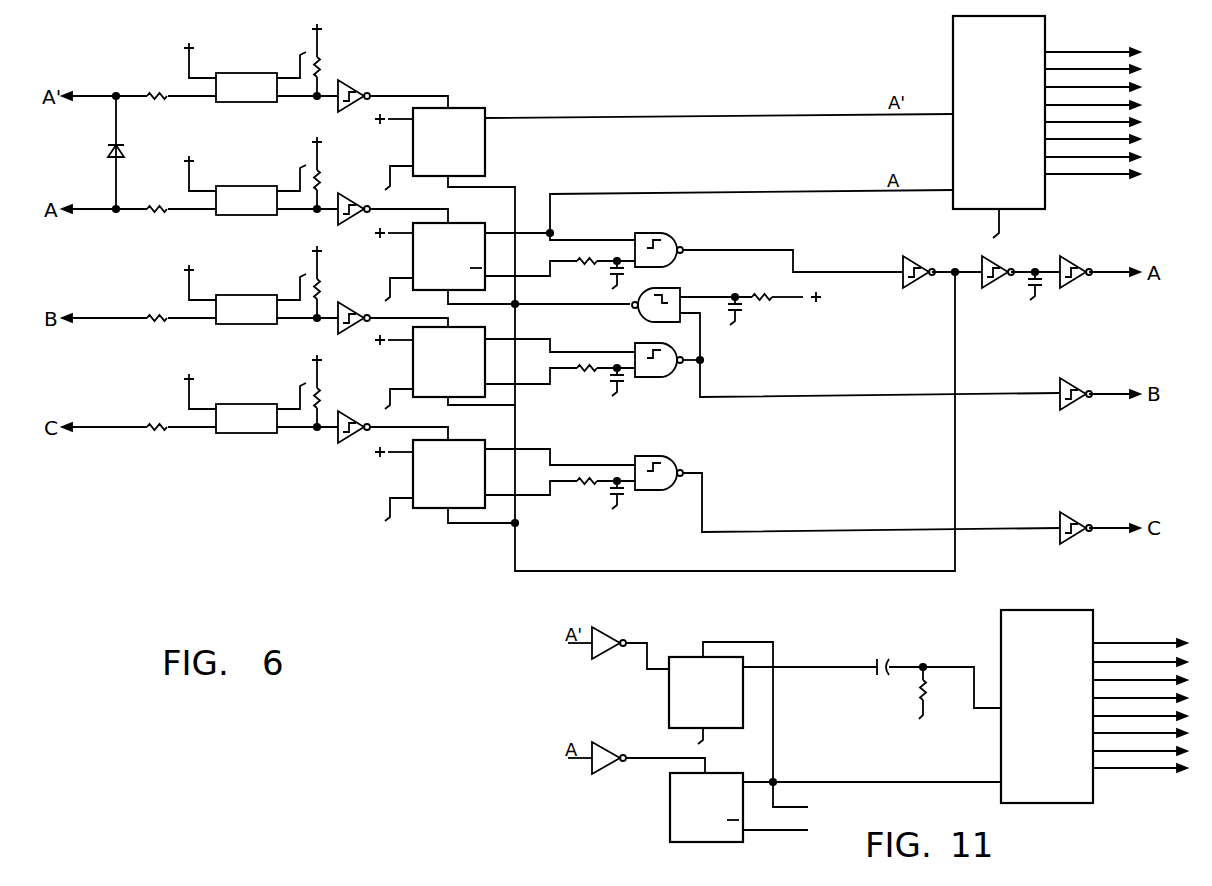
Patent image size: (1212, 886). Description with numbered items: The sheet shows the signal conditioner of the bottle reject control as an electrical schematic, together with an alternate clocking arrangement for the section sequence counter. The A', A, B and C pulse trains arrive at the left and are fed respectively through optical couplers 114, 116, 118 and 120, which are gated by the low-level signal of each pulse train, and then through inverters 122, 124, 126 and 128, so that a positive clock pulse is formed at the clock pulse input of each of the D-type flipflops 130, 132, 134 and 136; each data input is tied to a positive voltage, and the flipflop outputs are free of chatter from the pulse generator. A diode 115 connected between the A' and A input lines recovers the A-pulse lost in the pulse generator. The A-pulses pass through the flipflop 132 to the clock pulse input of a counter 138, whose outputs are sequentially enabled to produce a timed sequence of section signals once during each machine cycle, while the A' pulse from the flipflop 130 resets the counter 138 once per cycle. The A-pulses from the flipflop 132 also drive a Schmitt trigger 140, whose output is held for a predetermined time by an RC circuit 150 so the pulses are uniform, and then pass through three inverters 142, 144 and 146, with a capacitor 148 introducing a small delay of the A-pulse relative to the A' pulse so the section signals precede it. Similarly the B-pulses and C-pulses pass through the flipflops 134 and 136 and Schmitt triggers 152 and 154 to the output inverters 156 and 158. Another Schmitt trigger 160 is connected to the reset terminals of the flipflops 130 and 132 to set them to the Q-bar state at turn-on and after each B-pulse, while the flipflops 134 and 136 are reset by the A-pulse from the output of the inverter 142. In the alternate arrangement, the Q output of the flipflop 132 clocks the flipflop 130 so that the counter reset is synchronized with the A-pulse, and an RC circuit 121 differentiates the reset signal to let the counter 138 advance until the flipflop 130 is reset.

In FIG. 6, the optical coupler 114 is at (257, 101).
In FIG. 6, the diode 115 is at (124, 151).
In FIG. 6, the optical coupler 116 is at (250, 214).
In FIG. 6, the optical coupler 118 is at (246, 323).
In FIG. 6, the optical coupler 120 is at (252, 432).
In FIG. 11, the RC circuit 121 is at (880, 657).
In FIG. 6, the inverter 122 is at (350, 87).
In FIG. 11, the inverter 122 is at (605, 642).
In FIG. 6, the inverter 124 is at (350, 198).
In FIG. 11, the inverter 124 is at (610, 756).
In FIG. 6, the inverter 126 is at (350, 308).
In FIG. 6, the inverter 128 is at (358, 409).
In FIG. 6, the D-type flipflop 130 is at (472, 107).
In FIG. 11, the D-type flipflop 130 is at (683, 657).
In FIG. 6, the D-type flipflop 132 is at (465, 223).
In FIG. 11, the D-type flipflop 132 is at (670, 800).
In FIG. 6, the D-type flipflop 134 is at (463, 327).
In FIG. 6, the D-type flipflop 136 is at (455, 440).
In FIG. 6, the counter 138 is at (953, 65).
In FIG. 11, the counter 138 is at (1001, 664).
In FIG. 6, the Schmitt trigger 140 is at (683, 224).
In FIG. 6, the inverter 142 is at (919, 264).
In FIG. 6, the inverter 144 is at (1004, 264).
In FIG. 6, the inverter 146 is at (1081, 264).
In FIG. 6, the capacitor 148 is at (1043, 299).
In FIG. 6, the RC circuit 150 is at (604, 285).
In FIG. 6, the Schmitt trigger 152 is at (656, 377).
In FIG. 6, the Schmitt trigger 154 is at (654, 490).
In FIG. 6, the inverter 156 is at (1074, 400).
In FIG. 6, the inverter 158 is at (1079, 523).
In FIG. 6, the Schmitt trigger 160 is at (671, 288).